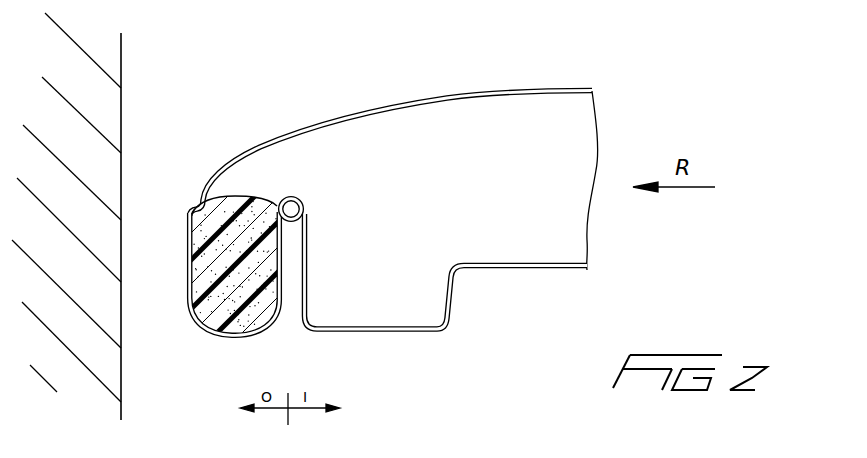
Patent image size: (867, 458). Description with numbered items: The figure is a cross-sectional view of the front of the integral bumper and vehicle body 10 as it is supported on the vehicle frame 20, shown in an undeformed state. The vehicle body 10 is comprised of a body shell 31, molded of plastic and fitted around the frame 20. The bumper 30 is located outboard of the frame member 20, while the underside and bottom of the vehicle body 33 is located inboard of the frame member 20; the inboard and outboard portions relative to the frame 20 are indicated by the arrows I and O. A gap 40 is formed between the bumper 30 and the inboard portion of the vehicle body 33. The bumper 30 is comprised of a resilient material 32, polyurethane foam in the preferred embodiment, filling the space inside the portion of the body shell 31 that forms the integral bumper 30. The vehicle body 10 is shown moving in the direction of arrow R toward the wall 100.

The wall 100 is at (122, 65).
The vehicle body 10 is at (283, 120).
The frame 20 is at (297, 220).
The bumper 30 is at (234, 264).
The body shell 31 is at (188, 227).
The resilient material 32 is at (206, 282).
The underside and bottom of the vehicle body 33 is at (308, 278).
The gap 40 is at (285, 300).